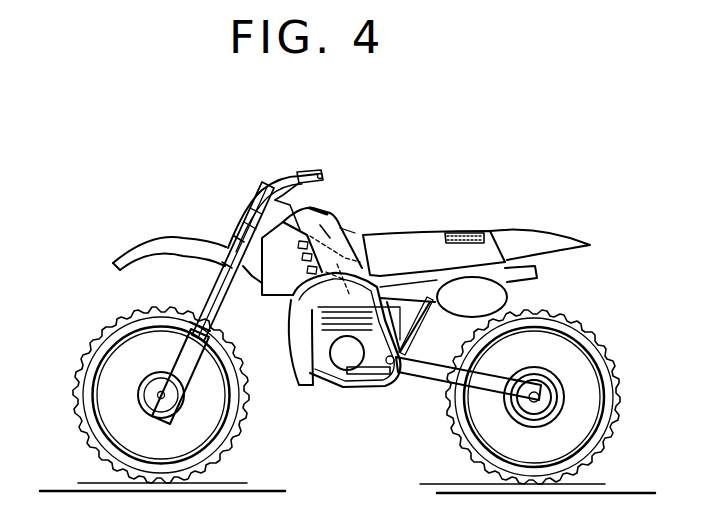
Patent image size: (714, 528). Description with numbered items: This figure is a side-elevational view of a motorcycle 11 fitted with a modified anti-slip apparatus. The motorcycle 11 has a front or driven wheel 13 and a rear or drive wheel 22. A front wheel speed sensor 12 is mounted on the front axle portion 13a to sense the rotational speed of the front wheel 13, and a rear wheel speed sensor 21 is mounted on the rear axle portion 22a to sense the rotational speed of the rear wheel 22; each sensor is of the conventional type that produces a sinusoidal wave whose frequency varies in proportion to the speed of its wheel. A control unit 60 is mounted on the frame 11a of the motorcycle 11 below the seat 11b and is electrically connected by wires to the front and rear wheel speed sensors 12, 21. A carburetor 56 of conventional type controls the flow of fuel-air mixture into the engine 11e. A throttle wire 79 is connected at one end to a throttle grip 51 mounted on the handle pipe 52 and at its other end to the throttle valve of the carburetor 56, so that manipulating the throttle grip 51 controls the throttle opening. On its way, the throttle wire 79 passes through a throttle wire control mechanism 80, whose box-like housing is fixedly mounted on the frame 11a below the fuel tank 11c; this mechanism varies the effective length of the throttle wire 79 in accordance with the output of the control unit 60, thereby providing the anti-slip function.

The motorcycle 11 is at (153, 218).
The frame 11a is at (392, 300).
The seat 11b is at (428, 240).
The fuel tank 11c is at (339, 228).
The engine 11e is at (345, 372).
The front wheel speed sensor 12 is at (148, 385).
The front wheel 13 is at (78, 390).
The front axle portion 13a is at (158, 398).
The rear wheel speed sensor 21 is at (545, 385).
The rear wheel 22 is at (610, 355).
The rear axle portion 22a is at (538, 402).
The throttle grip 51 is at (317, 172).
The handle pipe 52 is at (291, 178).
The carburetor 56 is at (372, 372).
The control unit 60 is at (462, 235).
The throttle wire 79 is at (355, 230).
The throttle wire control mechanism 80 is at (345, 240).